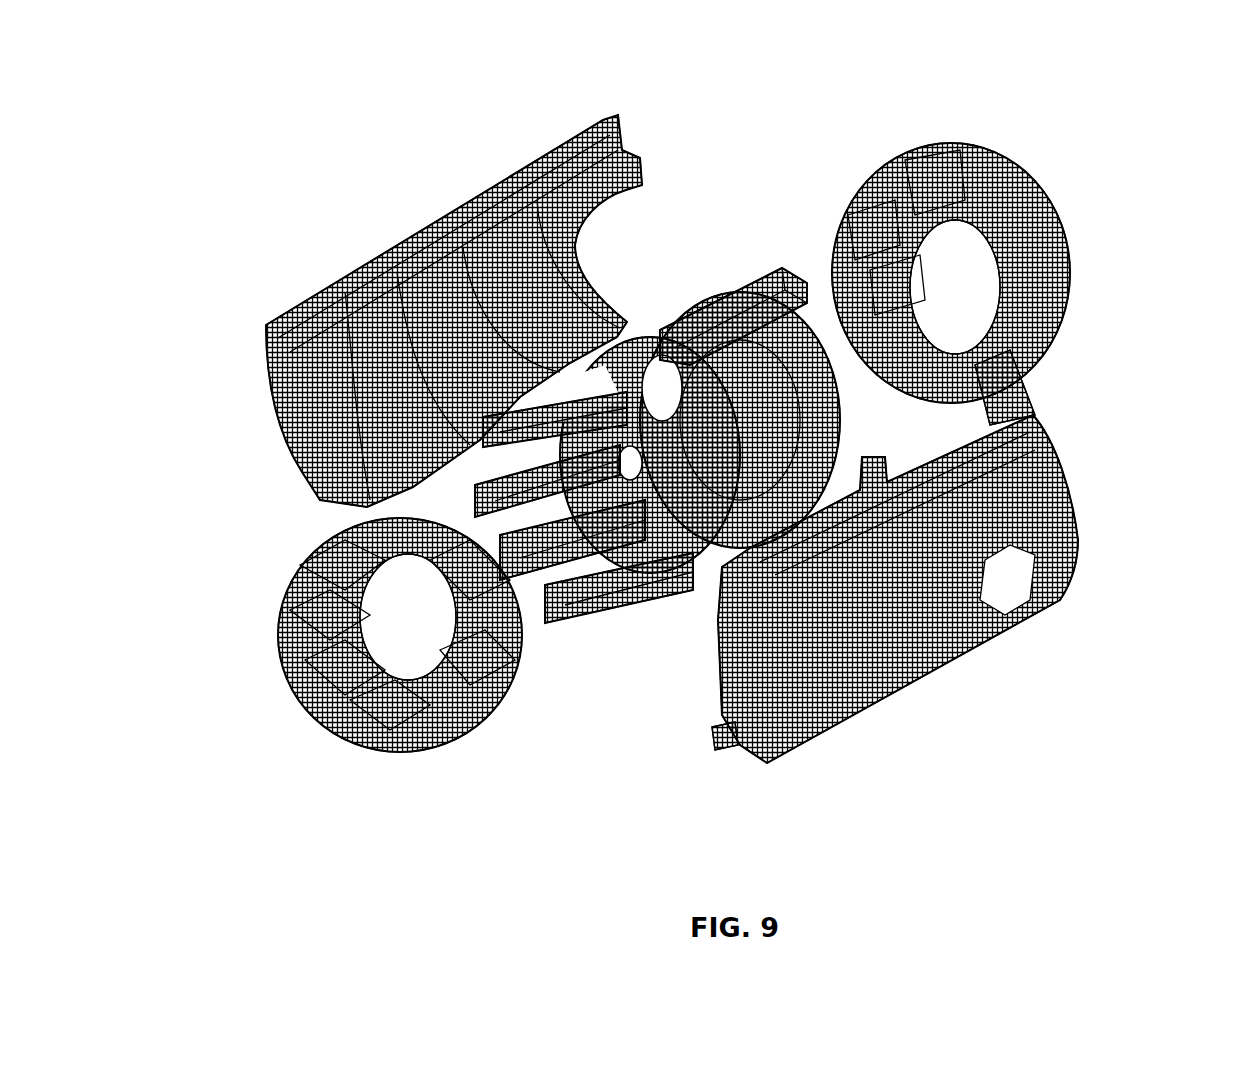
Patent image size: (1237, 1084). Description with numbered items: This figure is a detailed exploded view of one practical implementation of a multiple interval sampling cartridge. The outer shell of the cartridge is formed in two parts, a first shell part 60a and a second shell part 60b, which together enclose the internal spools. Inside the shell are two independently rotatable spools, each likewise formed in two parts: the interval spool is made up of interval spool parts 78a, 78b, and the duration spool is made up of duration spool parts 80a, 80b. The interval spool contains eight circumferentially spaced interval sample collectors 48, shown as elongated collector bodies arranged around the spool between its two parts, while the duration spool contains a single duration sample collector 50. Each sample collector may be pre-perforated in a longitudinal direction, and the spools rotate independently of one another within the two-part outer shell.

The interval sample collector 48 is at (478, 453).
The duration sample collector 50 is at (765, 272).
The outer shell part 60a is at (1070, 516).
The outer shell part 60b is at (500, 162).
The interval spool part 78a is at (459, 727).
The interval spool part 78b is at (700, 540).
The duration spool part 80a is at (655, 308).
The duration spool part 80b is at (1037, 197).